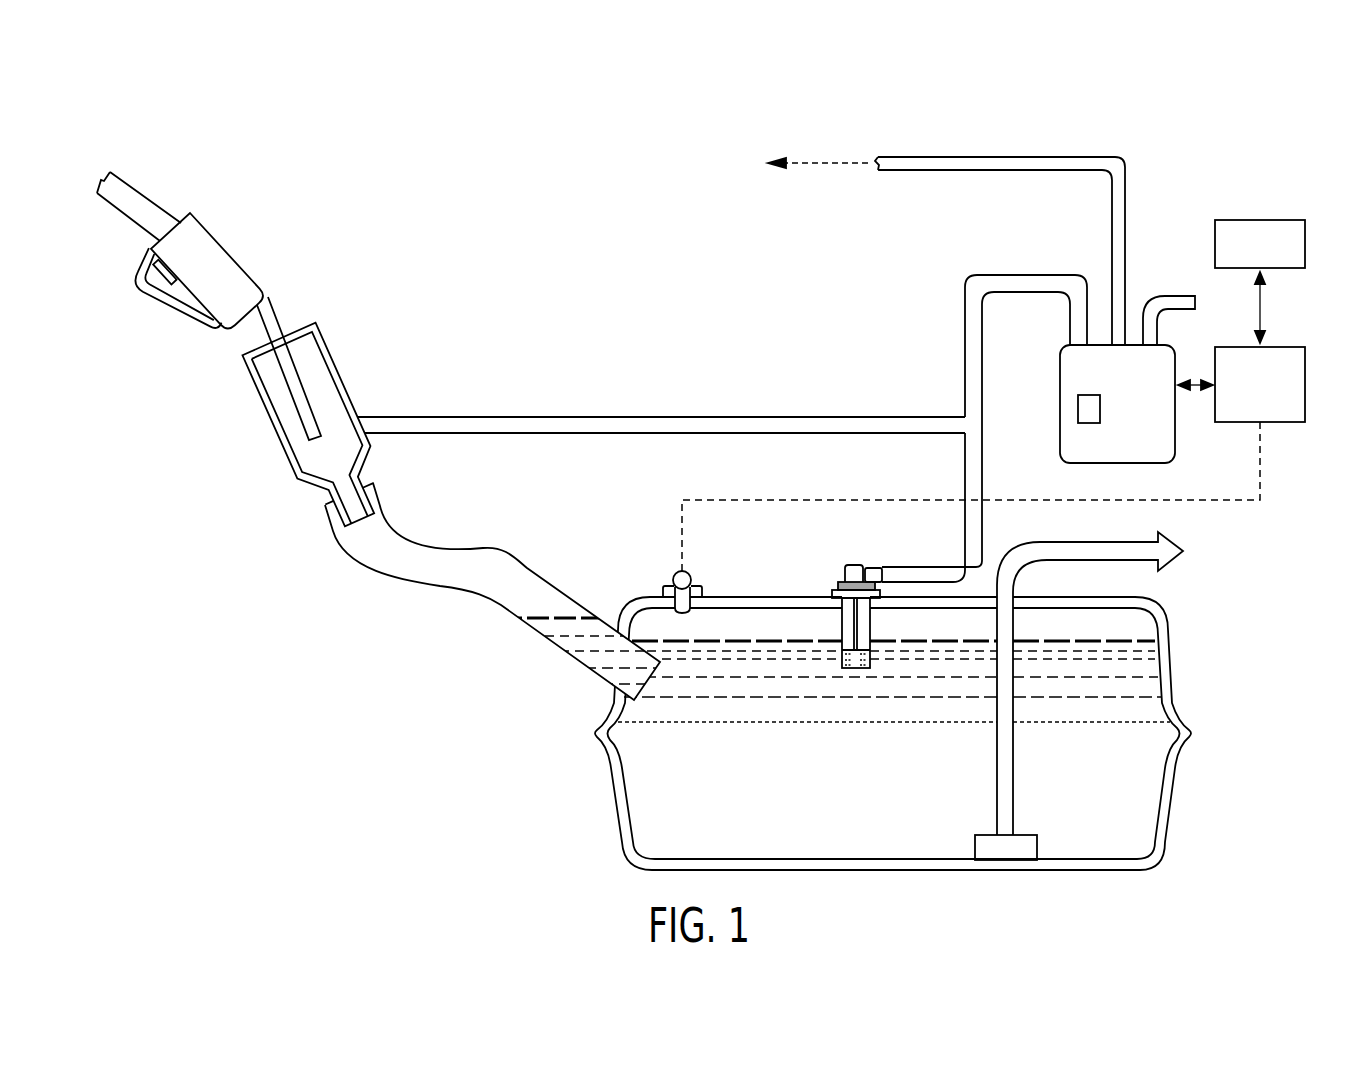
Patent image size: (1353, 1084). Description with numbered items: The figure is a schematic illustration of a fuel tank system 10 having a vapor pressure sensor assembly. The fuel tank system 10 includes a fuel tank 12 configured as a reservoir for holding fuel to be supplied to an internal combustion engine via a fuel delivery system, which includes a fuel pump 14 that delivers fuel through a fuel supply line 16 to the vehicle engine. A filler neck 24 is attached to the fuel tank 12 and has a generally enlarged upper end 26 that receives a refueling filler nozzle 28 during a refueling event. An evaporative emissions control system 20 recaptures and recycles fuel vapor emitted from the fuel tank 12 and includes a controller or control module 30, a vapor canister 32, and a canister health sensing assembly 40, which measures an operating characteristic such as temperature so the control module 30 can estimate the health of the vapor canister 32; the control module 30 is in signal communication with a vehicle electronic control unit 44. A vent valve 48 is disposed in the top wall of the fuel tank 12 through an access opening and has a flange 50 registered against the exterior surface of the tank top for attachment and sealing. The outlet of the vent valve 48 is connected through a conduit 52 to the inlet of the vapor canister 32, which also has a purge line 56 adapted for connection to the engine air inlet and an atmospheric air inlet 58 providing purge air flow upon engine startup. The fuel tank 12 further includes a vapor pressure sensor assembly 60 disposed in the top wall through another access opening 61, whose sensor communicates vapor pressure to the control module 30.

The fuel tank system 10 is at (630, 250).
The fuel tank 12 is at (662, 793).
The fuel pump 14 is at (1025, 850).
The fuel supply line 16 is at (1122, 553).
The evaporative emissions control system 20 is at (1204, 124).
The filler neck 24 is at (452, 547).
The enlarged upper end 26 is at (335, 370).
The refueling filler nozzle 28 is at (217, 260).
The control module 30 is at (1277, 423).
The vapor canister 32 is at (1080, 448).
The canister health sensing assembly 40 is at (1080, 410).
The vehicle electronic control unit 44 is at (1265, 220).
The vent valve 48 is at (623, 418).
The flange 50 is at (832, 590).
The conduit 52 is at (970, 350).
The purge line 56 is at (1002, 163).
The atmospheric air inlet 58 is at (1180, 300).
The vapor pressure sensor assembly 60 is at (666, 560).
The access opening 61 is at (667, 593).